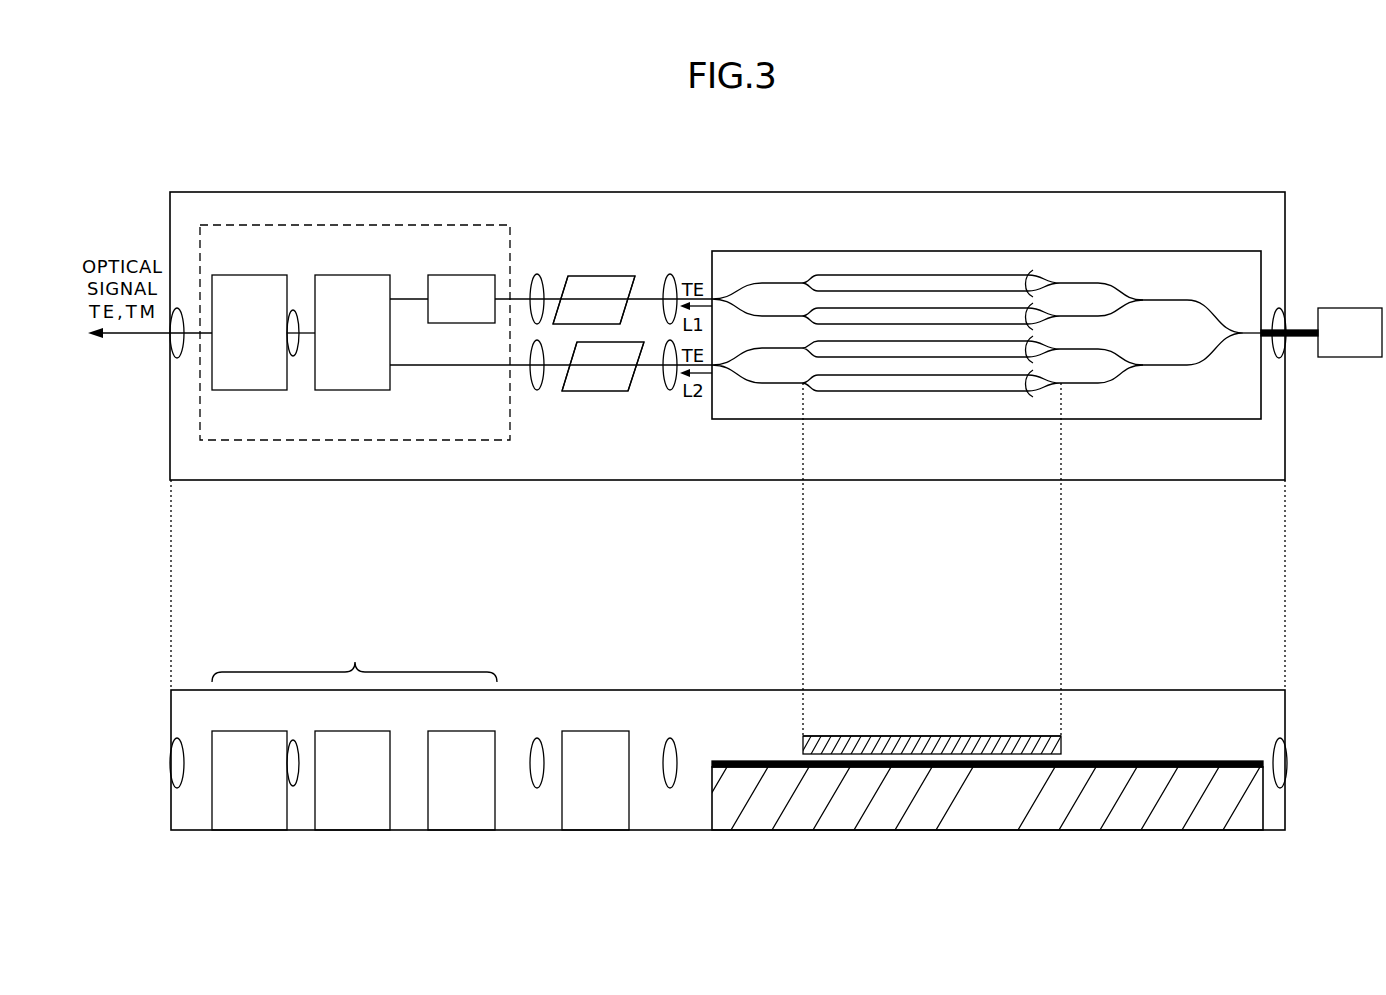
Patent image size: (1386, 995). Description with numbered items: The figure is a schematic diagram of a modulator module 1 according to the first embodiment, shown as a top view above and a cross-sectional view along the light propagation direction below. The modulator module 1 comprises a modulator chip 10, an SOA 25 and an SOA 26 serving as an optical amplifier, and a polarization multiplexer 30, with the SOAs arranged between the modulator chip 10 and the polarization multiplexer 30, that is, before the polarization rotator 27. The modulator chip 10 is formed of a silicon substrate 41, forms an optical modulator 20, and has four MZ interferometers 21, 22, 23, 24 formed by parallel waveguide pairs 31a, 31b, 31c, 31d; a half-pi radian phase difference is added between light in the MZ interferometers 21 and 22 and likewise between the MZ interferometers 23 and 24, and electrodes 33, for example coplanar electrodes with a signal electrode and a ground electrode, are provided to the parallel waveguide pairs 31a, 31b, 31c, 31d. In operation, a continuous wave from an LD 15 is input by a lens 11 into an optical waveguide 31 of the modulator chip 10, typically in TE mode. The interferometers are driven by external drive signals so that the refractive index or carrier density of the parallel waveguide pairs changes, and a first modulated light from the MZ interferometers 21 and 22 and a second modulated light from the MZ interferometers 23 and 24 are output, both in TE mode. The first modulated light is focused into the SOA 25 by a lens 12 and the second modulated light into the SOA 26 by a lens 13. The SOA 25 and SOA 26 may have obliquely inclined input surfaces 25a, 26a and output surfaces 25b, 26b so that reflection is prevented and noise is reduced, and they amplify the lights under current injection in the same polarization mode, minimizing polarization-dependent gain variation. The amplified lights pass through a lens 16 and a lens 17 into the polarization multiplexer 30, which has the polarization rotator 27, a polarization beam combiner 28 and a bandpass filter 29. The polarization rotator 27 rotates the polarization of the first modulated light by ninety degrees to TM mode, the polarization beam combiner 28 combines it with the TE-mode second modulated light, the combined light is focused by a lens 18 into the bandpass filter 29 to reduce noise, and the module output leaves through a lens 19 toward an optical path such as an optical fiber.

The modulator module 1 is at (1212, 192).
The modulator chip 10 is at (1150, 251).
The lens 11 is at (1285, 348).
The lens 12 is at (670, 274).
The lens 13 is at (670, 391).
The LD 15 is at (1352, 308).
The lens 16 is at (537, 274).
The lens 17 is at (536, 392).
The lens 18 is at (298, 357).
The lens 19 is at (181, 358).
The optical modulator 20 is at (1242, 244).
The MZ interferometer 21 is at (879, 264).
The MZ interferometer 22 is at (926, 298).
The MZ interferometer 23 is at (868, 370).
The MZ interferometer 24 is at (938, 405).
The SOA 25 is at (601, 276).
The input surface 25a is at (630, 300).
The output surface 25b is at (554, 300).
The SOA 26 is at (600, 391).
The input surface 26a is at (630, 375).
The output surface 26b is at (572, 370).
The polarization rotator 27 is at (462, 275).
The polarization beam combiner 28 is at (352, 275).
The bandpass filter 29 is at (252, 275).
The polarization multiplexer 30 is at (455, 225).
The optical waveguide 31 is at (1253, 330).
The parallel waveguide pair 31a is at (1036, 284).
The parallel waveguide pair 31b is at (1036, 317).
The parallel waveguide pair 31c is at (1036, 350).
The parallel waveguide pair 31d is at (1036, 383).
The electrode 33 is at (985, 736).
The silicon substrate 41 is at (1255, 797).